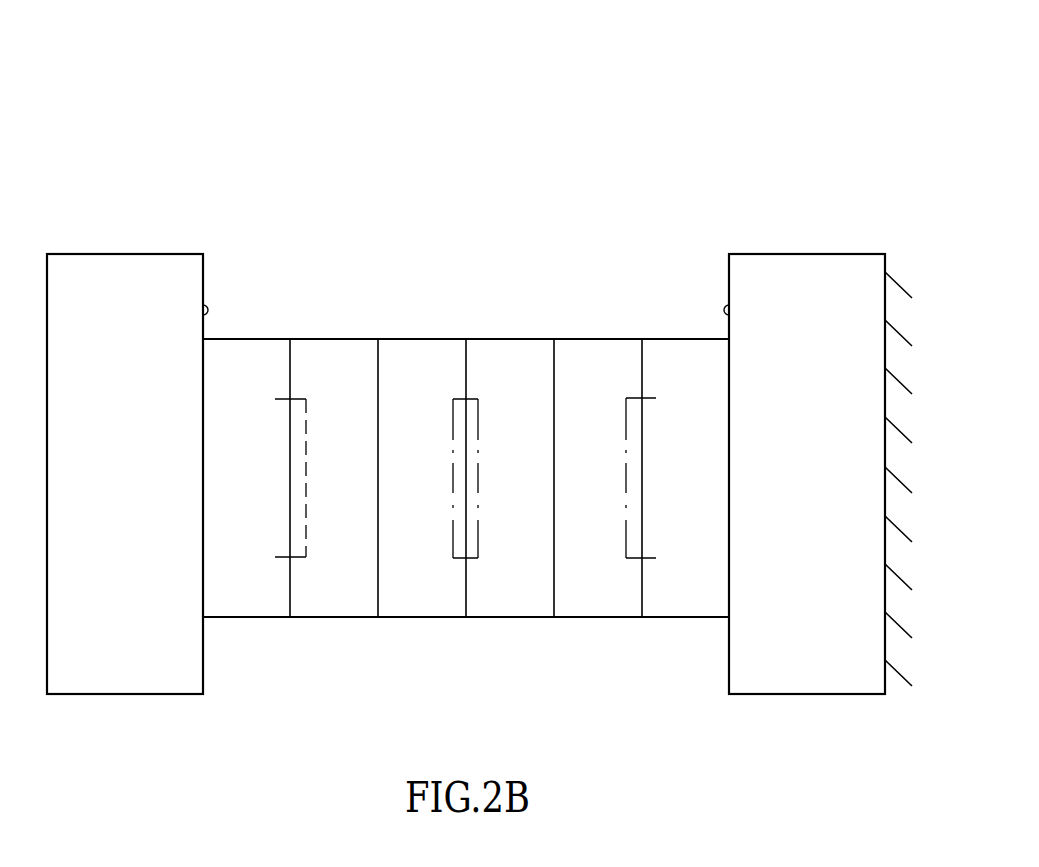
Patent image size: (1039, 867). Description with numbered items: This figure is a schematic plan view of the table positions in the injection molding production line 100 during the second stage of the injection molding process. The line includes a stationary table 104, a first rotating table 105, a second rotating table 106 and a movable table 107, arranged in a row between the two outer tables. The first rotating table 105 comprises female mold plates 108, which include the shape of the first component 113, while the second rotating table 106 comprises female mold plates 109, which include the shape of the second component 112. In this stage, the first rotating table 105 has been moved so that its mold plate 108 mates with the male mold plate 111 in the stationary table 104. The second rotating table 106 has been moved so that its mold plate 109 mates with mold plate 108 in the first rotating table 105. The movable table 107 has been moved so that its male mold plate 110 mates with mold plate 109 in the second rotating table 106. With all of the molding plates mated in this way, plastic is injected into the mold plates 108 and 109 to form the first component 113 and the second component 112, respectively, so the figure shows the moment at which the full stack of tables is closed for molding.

The injection molding production line 100 is at (866, 92).
The stationary table 104 is at (807, 240).
The first rotating table 105 is at (555, 310).
The second rotating table 106 is at (380, 310).
The movable table 107 is at (128, 213).
The female mold plate 108 is at (580, 598).
The female mold plate 109 is at (404, 598).
The male mold plate 110 is at (247, 605).
The male mold plate 111 is at (688, 605).
The second component 112 is at (280, 398).
The first component 113 is at (480, 420).